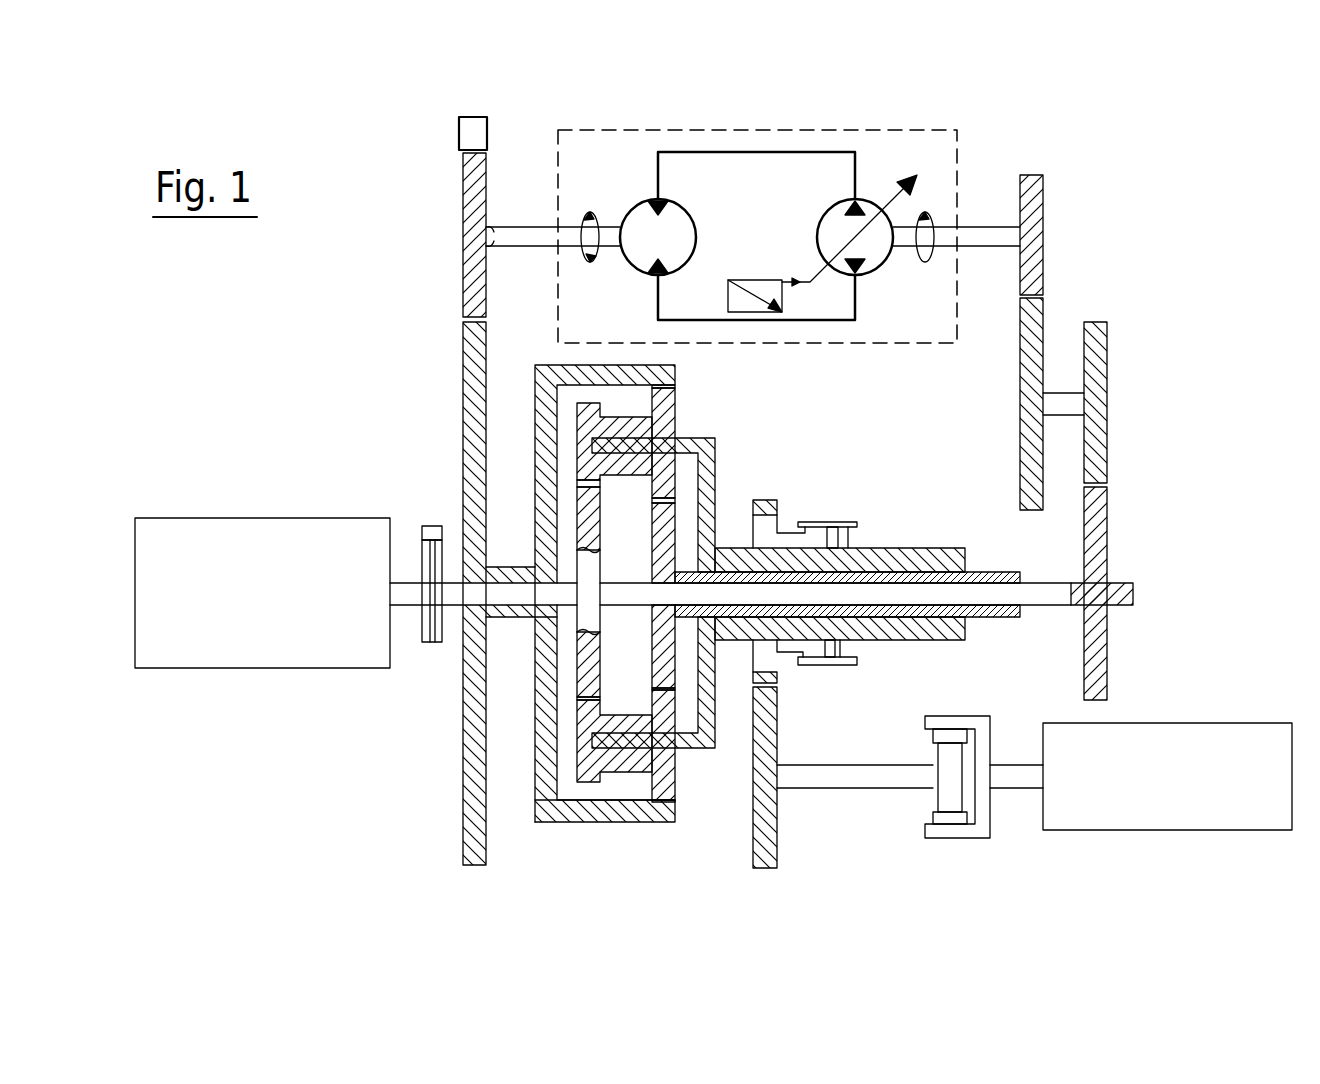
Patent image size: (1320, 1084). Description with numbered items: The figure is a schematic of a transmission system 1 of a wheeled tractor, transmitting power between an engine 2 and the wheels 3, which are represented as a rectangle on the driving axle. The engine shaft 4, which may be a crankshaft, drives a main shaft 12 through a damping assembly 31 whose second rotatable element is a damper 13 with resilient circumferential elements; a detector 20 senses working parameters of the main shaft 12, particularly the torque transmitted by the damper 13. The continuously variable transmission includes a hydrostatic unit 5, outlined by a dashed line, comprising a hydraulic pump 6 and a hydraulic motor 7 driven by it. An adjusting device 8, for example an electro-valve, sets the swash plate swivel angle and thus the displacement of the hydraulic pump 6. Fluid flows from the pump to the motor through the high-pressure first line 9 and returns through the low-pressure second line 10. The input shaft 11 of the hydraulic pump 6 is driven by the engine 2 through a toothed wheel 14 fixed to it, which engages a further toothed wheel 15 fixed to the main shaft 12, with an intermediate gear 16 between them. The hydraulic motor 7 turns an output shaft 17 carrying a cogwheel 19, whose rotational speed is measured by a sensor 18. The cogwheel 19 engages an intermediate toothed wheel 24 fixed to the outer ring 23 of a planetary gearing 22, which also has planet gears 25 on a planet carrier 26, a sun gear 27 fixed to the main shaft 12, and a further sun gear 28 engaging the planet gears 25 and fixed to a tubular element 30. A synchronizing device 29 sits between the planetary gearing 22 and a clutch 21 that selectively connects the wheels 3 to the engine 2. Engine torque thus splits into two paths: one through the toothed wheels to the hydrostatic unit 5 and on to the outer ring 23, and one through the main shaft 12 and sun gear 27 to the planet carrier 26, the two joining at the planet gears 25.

The transmission system 1 is at (1197, 150).
The engine 2 is at (256, 552).
The wheels 3 is at (1200, 742).
The engine shaft 4 is at (403, 578).
The hydrostatic unit 5 is at (885, 343).
The hydraulic pump 6 is at (888, 262).
The hydraulic motor 7 is at (640, 212).
The adjusting device 8 is at (730, 310).
The first line 9 is at (828, 322).
The second line 10 is at (770, 152).
The input shaft 11 is at (986, 238).
The main shaft 12 is at (1052, 605).
The damper 13 is at (446, 642).
The toothed wheel 14 is at (1043, 256).
The further toothed wheel 15 is at (1100, 643).
The intermediate gear 16 is at (1132, 399).
The output shaft 17 is at (522, 238).
The sensor 18 is at (460, 119).
The cogwheel 19 is at (462, 238).
The detector 20 is at (433, 525).
The clutch 21 is at (933, 735).
The planetary gearing 22 is at (532, 878).
The outer ring 23 is at (613, 810).
The intermediate toothed wheel 24 is at (462, 402).
The planet gears 25 is at (665, 408).
The planet carrier 26 is at (712, 490).
The sun gear 27 is at (578, 652).
The further sun gear 28 is at (680, 652).
The synchronizing device 29 is at (822, 520).
The tubular element 30 is at (912, 560).
The damping assembly 31 is at (392, 758).